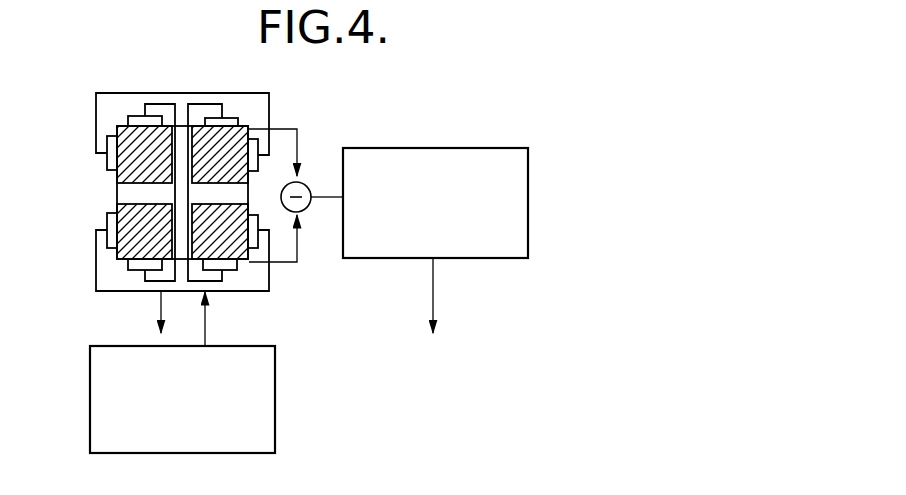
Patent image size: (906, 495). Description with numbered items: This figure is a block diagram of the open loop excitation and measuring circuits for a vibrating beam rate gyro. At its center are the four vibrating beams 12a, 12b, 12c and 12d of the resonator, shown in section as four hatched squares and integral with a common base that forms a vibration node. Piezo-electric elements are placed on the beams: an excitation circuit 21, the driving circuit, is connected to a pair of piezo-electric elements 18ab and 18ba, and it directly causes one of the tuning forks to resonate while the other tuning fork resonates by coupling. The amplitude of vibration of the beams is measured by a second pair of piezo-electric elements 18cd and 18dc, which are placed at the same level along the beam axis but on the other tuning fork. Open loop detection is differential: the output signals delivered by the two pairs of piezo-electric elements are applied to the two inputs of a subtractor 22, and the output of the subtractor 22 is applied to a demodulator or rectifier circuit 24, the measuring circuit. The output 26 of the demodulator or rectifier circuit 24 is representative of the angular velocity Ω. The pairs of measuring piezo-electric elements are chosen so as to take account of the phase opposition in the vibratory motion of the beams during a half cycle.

The vibrating beam 12a is at (227, 245).
The vibrating beam 12b is at (225, 140).
The vibrating beam 12c is at (133, 244).
The vibrating beam 12d is at (131, 147).
The piezo-electric element 18dc is at (137, 116).
The piezo-electric element 18ba is at (225, 118).
The piezo-electric element 18cd is at (140, 266).
The piezo-electric element 18ab is at (222, 272).
The excitation circuit 21 is at (90, 382).
The subtractor 22 is at (304, 184).
The demodulator or rectifier circuit 24 is at (438, 148).
The output 26 is at (433, 290).